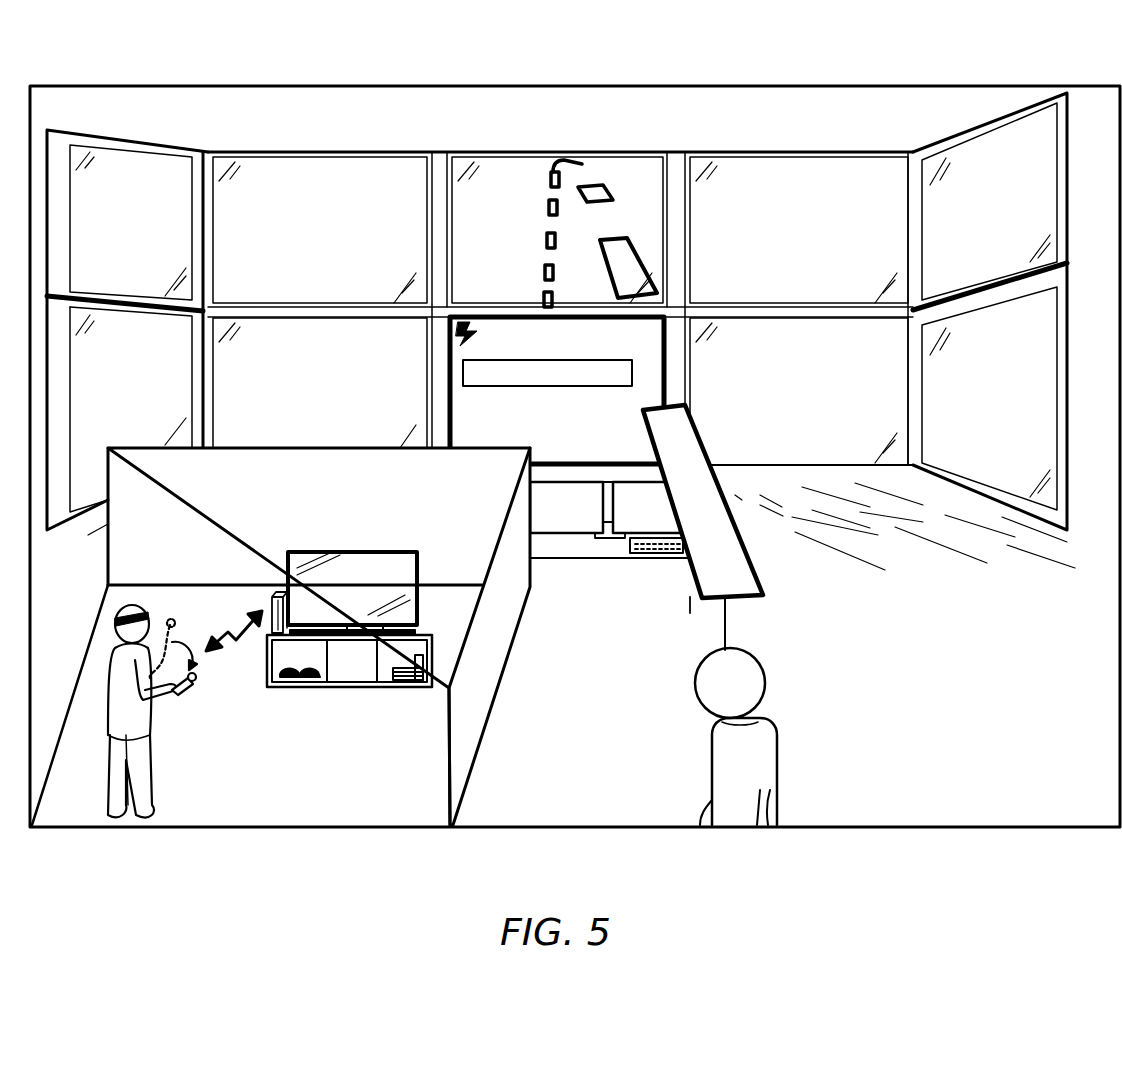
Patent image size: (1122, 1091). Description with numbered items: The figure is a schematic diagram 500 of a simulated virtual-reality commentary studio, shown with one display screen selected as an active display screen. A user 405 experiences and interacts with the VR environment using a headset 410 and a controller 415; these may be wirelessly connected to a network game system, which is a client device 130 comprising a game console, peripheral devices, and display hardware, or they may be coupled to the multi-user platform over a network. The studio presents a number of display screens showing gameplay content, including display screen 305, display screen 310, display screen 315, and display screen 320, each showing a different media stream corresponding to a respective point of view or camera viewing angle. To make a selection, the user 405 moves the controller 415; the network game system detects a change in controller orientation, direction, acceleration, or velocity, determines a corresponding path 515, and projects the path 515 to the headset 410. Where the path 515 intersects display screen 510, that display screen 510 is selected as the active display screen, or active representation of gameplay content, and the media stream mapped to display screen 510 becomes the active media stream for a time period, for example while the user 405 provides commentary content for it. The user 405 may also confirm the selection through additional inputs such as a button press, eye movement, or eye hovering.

The schematic diagram 500 is at (576, 431).
The display screen 305 is at (320, 383).
The display screen 310 is at (320, 230).
The display screen 315 is at (557, 232).
The display screen 320 is at (799, 230).
The display screen 510 is at (557, 390).
The path 515 is at (690, 463).
The headset 410 is at (145, 587).
The client device 130 is at (263, 593).
The controller 415 is at (197, 680).
The user 405 is at (135, 757).